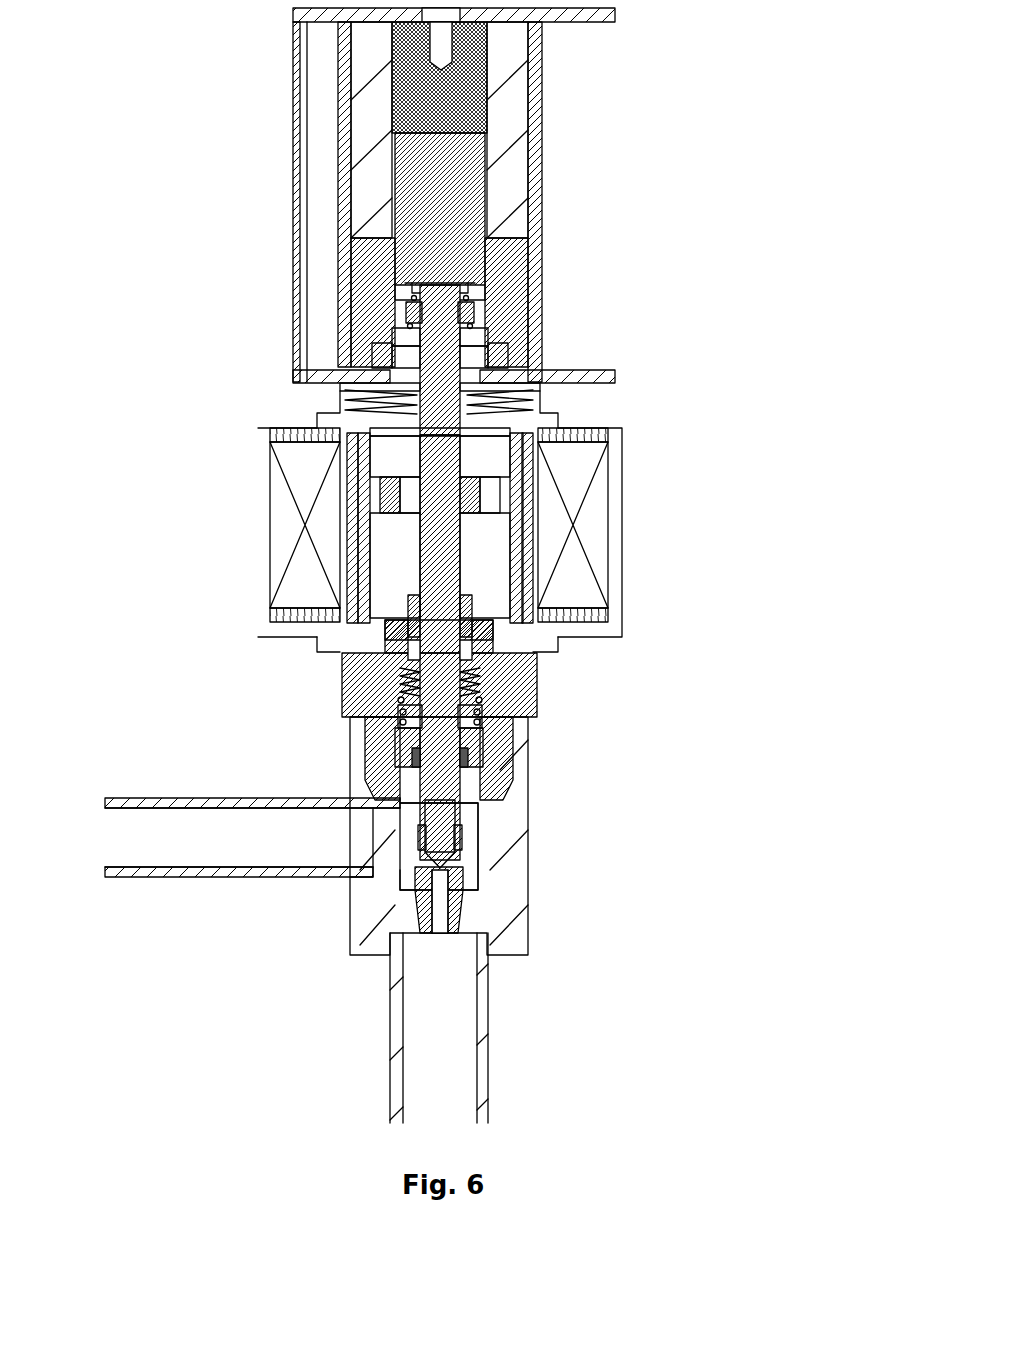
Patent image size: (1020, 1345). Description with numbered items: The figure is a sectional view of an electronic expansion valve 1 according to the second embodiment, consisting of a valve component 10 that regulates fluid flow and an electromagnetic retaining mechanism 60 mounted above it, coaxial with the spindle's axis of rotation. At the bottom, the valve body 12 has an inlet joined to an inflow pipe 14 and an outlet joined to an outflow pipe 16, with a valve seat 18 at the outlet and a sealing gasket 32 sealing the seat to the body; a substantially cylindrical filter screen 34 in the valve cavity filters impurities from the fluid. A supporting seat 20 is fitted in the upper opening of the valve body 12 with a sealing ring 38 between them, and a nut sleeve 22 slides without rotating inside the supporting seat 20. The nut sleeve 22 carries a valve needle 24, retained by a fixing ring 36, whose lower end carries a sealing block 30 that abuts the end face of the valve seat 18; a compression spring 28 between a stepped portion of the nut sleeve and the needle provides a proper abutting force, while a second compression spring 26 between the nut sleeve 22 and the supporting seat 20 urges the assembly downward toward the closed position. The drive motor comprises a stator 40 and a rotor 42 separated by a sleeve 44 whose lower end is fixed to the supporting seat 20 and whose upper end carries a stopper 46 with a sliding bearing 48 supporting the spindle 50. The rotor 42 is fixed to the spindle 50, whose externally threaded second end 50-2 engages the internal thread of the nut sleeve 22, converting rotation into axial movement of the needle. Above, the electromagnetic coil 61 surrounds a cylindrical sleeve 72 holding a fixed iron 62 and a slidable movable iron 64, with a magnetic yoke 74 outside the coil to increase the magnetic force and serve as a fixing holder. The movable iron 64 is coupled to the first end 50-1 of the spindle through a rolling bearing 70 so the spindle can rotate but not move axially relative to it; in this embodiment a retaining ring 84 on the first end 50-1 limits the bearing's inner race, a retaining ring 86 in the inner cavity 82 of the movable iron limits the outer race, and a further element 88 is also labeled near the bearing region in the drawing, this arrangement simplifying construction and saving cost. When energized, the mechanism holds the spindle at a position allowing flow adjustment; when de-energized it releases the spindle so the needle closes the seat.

The electronic expansion valve 1 is at (232, 1047).
The valve component 10 is at (135, 662).
The valve body 12 is at (500, 888).
The inflow pipe 14 is at (247, 872).
The outflow pipe 16 is at (480, 1030).
The valve seat 18 is at (445, 905).
The supporting seat 20 is at (538, 687).
The nut sleeve 22 is at (490, 635).
The valve needle 24 is at (455, 815).
The compression spring 26 is at (410, 722).
The compression spring 28 is at (420, 690).
The sealing block 30 is at (380, 840).
The sealing gasket 32 is at (387, 955).
The filter screen 34 is at (480, 845).
The fixing ring 36 is at (485, 762).
The sealing ring 38 is at (380, 797).
The stator 40 is at (575, 475).
The rotor 42 is at (480, 500).
The sleeve 44 is at (340, 577).
The stopper 46 is at (548, 395).
The sliding bearing 48 is at (345, 403).
The spindle 50 is at (440, 510).
The first end of the spindle 50-1 is at (400, 305).
The second end of the spindle 50-2 is at (375, 630).
The electromagnetic retaining mechanism 60 is at (212, 206).
The electromagnetic coil 61 is at (343, 170).
The fixed iron 62 is at (487, 70).
The movable iron 64 is at (490, 180).
The rolling bearing 70 is at (470, 318).
The sleeve 72 is at (455, 165).
The magnetic yoke 74 is at (592, 13).
The inner cavity 82 is at (395, 270).
The retaining ring 84 is at (470, 300).
The retaining ring 86 is at (480, 372).
The seal ring 88 is at (410, 305).